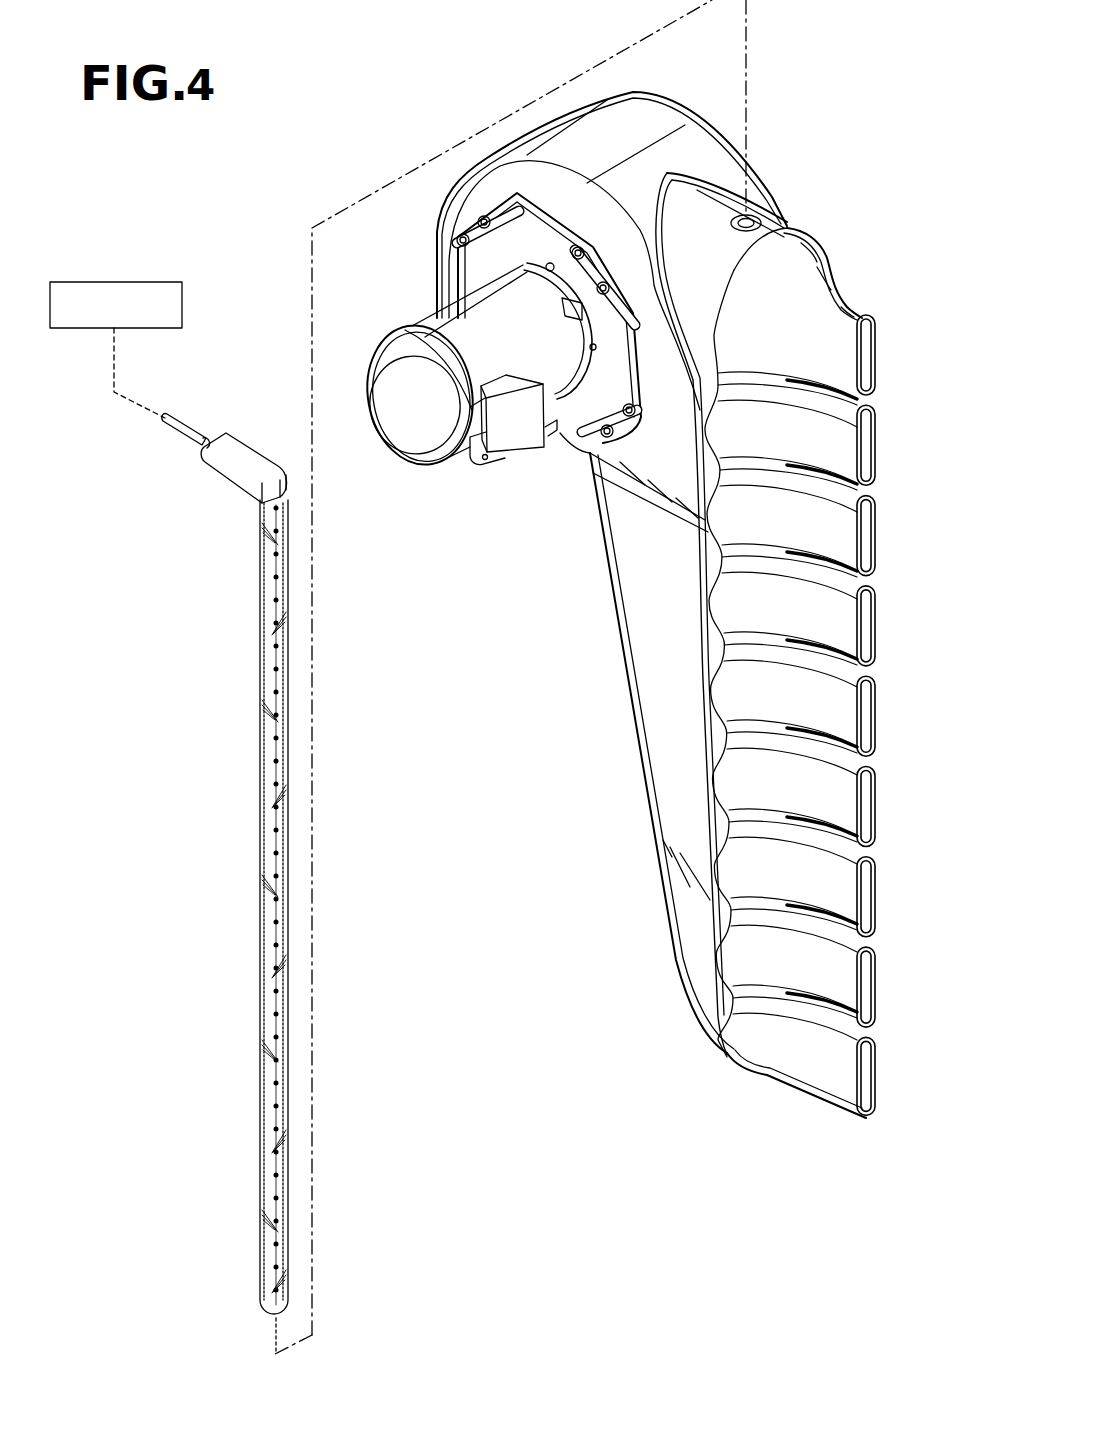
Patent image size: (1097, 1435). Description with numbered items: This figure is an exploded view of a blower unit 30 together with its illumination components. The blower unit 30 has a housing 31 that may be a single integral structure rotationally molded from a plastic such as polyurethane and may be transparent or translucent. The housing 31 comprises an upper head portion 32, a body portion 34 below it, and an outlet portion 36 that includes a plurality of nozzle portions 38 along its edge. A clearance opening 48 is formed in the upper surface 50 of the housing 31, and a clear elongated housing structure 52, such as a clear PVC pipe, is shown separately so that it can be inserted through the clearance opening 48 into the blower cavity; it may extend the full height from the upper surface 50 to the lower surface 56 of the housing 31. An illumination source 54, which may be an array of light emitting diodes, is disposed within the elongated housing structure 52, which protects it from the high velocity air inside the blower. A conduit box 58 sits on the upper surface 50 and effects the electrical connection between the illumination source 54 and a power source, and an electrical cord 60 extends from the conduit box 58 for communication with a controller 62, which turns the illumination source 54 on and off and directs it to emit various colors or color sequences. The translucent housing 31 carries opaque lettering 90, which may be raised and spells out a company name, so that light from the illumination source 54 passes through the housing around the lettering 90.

The blower unit 30 is at (656, 586).
The housing 31 is at (814, 250).
The upper head portion 32 is at (638, 241).
The body portion 34 is at (641, 743).
The outlet portion 36 is at (770, 1043).
The nozzle portions 38 is at (830, 1062).
The clearance opening 48 is at (754, 218).
The upper surface 50 is at (787, 222).
The elongated housing structure 52 is at (220, 907).
The illumination source 54 is at (268, 1247).
The lower surface 56 is at (707, 1033).
The conduit box 58 is at (273, 467).
The electrical cord 60 is at (180, 426).
The controller 62 is at (182, 300).
The opaque lettering 90 is at (656, 696).